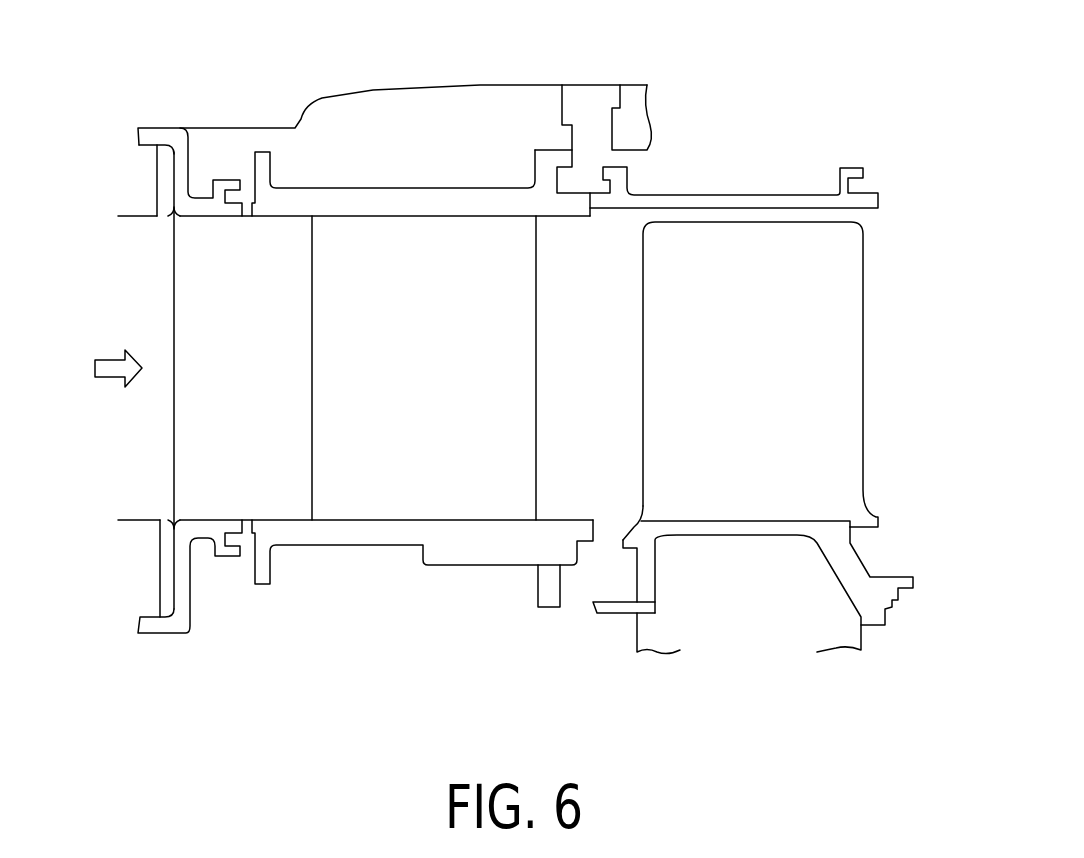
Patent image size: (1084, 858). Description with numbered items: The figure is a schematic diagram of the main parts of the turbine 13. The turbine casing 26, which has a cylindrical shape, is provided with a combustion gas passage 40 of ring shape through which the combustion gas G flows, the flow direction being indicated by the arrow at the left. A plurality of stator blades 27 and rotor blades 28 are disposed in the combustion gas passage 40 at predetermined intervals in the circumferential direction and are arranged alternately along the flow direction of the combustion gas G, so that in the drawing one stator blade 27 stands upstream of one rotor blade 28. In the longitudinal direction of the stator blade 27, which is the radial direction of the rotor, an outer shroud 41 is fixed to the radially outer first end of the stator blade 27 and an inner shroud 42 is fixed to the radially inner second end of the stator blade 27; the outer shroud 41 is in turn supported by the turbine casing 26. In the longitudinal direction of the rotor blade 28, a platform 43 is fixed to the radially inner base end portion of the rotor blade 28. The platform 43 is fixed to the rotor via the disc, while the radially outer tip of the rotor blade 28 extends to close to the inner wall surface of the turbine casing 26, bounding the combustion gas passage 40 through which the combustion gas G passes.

The turbine 13 is at (764, 95).
The turbine casing 26 is at (354, 110).
The stator blade 27 is at (283, 258).
The rotor blade 28 is at (881, 264).
The combustion gas passage 40 is at (605, 373).
The outer shroud 41 is at (453, 203).
The inner shroud 42 is at (482, 547).
The platform 43 is at (767, 630).
The combustion gas G is at (95, 365).